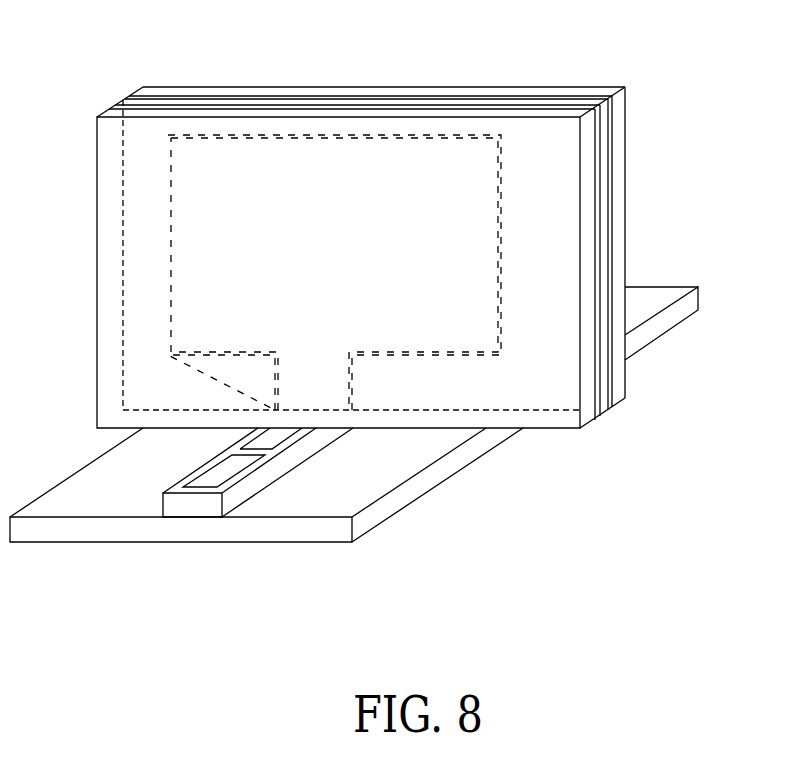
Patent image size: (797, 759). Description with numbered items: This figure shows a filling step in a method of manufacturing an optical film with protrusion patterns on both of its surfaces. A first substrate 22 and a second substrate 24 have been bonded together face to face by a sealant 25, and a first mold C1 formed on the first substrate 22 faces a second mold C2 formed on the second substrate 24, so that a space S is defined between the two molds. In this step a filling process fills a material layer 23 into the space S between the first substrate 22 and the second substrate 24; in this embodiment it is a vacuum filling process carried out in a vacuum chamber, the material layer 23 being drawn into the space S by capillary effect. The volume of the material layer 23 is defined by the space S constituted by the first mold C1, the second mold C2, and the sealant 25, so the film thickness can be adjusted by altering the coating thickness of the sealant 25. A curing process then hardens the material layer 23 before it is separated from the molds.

The first substrate 22 is at (620, 112).
The first mold C1 is at (610, 143).
The second mold C2 is at (596, 197).
The second substrate 24 is at (593, 260).
The sealant 25 is at (390, 134).
The space S is at (123, 98).
The material layer 23 is at (277, 435).